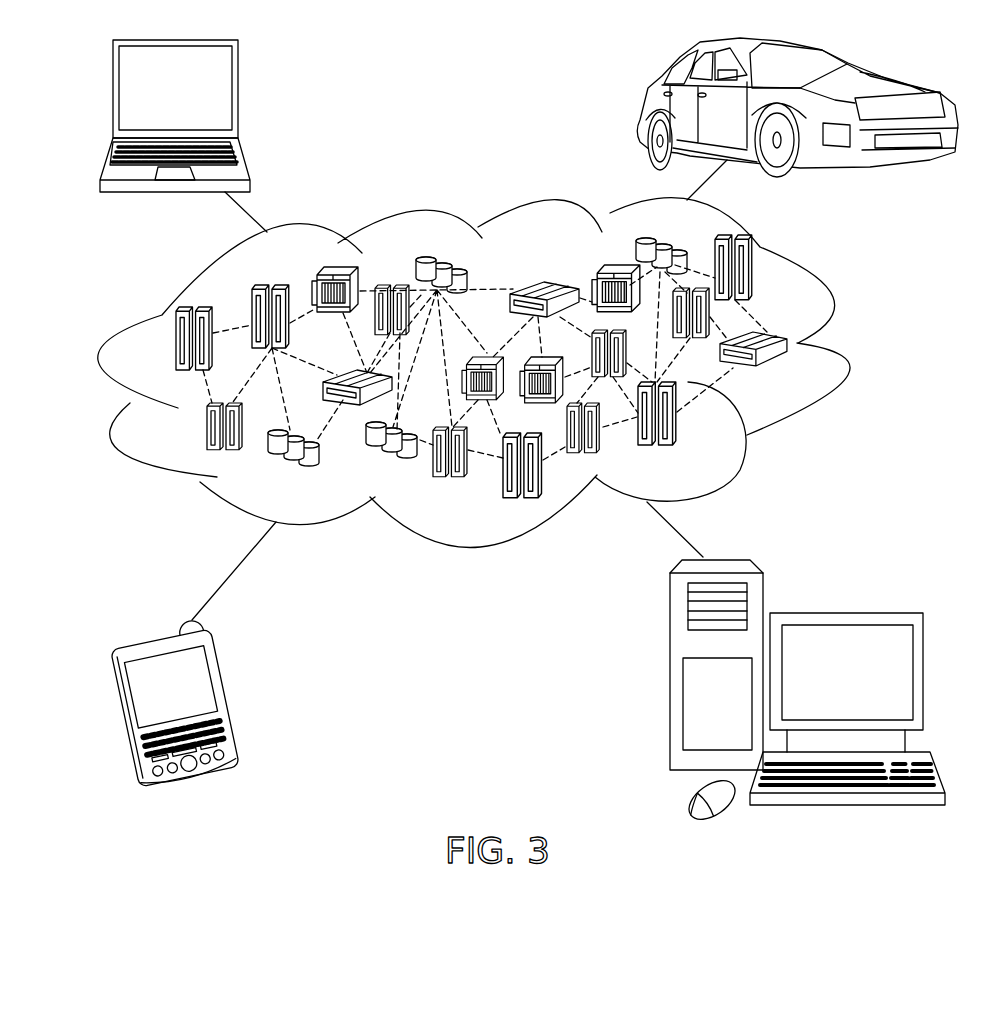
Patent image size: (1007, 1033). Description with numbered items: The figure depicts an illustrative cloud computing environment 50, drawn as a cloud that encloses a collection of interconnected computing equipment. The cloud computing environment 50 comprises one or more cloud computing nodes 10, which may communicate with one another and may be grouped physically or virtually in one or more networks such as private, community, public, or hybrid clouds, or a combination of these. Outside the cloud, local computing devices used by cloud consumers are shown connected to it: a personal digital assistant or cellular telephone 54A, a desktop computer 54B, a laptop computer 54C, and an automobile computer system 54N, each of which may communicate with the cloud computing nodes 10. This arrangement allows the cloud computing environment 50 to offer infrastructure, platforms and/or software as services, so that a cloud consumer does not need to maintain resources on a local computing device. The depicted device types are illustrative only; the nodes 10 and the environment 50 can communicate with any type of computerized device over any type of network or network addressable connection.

The cloud computing environment 50 is at (845, 348).
The cloud computing node 10 is at (793, 373).
The personal digital assistant or cellular telephone 54A is at (233, 695).
The desktop computer 54B is at (843, 613).
The laptop computer 54C is at (239, 96).
The automobile computer system 54N is at (640, 104).